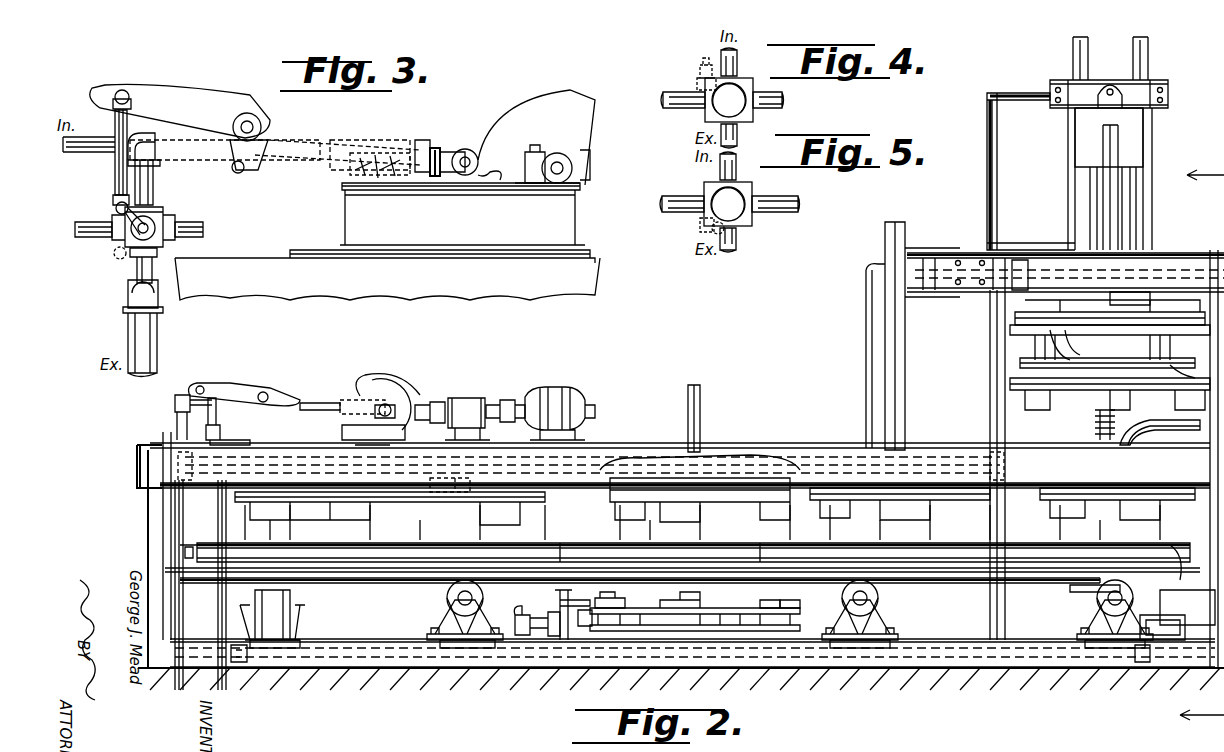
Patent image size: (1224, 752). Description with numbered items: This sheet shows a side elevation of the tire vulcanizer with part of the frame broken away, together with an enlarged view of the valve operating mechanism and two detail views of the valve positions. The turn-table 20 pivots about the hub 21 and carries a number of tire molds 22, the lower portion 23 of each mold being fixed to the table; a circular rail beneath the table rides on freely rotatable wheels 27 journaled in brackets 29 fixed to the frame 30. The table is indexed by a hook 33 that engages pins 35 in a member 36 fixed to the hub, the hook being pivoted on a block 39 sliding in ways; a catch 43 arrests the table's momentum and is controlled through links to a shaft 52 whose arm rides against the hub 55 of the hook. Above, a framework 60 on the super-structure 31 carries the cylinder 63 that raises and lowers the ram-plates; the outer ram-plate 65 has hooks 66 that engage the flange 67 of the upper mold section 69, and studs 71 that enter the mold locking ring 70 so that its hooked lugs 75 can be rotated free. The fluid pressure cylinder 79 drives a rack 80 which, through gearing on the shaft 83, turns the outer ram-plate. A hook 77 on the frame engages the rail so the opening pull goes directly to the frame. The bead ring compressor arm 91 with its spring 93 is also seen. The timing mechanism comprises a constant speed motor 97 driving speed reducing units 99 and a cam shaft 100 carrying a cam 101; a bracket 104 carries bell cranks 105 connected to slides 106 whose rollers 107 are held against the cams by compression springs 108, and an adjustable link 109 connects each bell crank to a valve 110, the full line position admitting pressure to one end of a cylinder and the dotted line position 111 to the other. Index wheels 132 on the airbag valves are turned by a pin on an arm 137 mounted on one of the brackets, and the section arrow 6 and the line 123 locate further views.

In FIG. 2, the section line 6 is at (1198, 451).
In FIG. 2, the turn-table 20 is at (905, 548).
In FIG. 2, the hub 21 is at (684, 614).
In FIG. 2, the tire molds 22 is at (405, 570).
In FIG. 2, the lower portion of mold 23 is at (1182, 569).
In FIG. 2, the freely rotatable wheels 27 is at (265, 570).
In FIG. 2, the brackets 29 is at (290, 610).
In FIG. 2, the frame 30 is at (350, 648).
In FIG. 2, the super-structure 31 is at (815, 448).
In FIG. 3, the super-structure 31 is at (470, 300).
In FIG. 2, the hook 33 is at (585, 640).
In FIG. 2, the pins 35 is at (760, 635).
In FIG. 2, the member 36 is at (790, 640).
In FIG. 2, the block 39 is at (605, 640).
In FIG. 2, the catch 43 is at (185, 550).
In FIG. 2, the shaft 52 is at (555, 640).
In FIG. 2, the hub of hook 55 is at (610, 598).
In FIG. 2, the framework 60 is at (1140, 57).
In FIG. 2, the cylinder 63 is at (1098, 185).
In FIG. 2, the outer ram-plate 65 is at (1015, 318).
In FIG. 2, the hooks 66 is at (1010, 340).
In FIG. 2, the flange 67 is at (1076, 350).
In FIG. 2, the upper mold section 69 is at (1020, 363).
In FIG. 2, the mold locking ring 70 is at (1010, 384).
In FIG. 2, the studs 71 is at (1150, 378).
In FIG. 2, the hooked lugs 75 is at (490, 512).
In FIG. 2, the hook 77 is at (1125, 588).
In FIG. 2, the fluid pressure cylinder 79 is at (965, 255).
In FIG. 2, the rack 80 is at (1040, 262).
In FIG. 2, the shaft 83 is at (1118, 142).
In FIG. 2, the arm 91 is at (1165, 428).
In FIG. 2, the spring 93 is at (1095, 430).
In FIG. 2, the constant speed motor 97 is at (555, 388).
In FIG. 2, the speed reducing units 99 is at (480, 390).
In FIG. 2, the cam shaft 100 is at (395, 405).
In FIG. 3, the cam shaft 100 is at (555, 190).
In FIG. 2, the cam 101 is at (385, 385).
In FIG. 3, the cam 101 is at (545, 95).
In FIG. 2, the bracket 104 is at (312, 400).
In FIG. 3, the bracket 104 is at (330, 140).
In FIG. 2, the bell cranks 105 is at (240, 385).
In FIG. 3, the bell cranks 105 is at (210, 105).
In FIG. 3, the slides 106 is at (440, 145).
In FIG. 3, the rollers 107 is at (470, 150).
In FIG. 3, the compression springs 108 is at (375, 190).
In FIG. 2, the adjustable link 109 is at (200, 416).
In FIG. 3, the adjustable link 109 is at (115, 172).
In FIG. 4, the adjustable link 109 is at (700, 56).
In FIG. 3, the valve 110 is at (163, 220).
In FIG. 4, the valve 110 is at (705, 118).
In FIG. 5, the valve 110 is at (760, 228).
In FIG. 3, the dotted line position 111 is at (115, 262).
In FIG. 2, the pipe line 123 is at (405, 565).
In FIG. 2, the index wheels 132 is at (1070, 582).
In FIG. 2, the arm 137 is at (1160, 600).